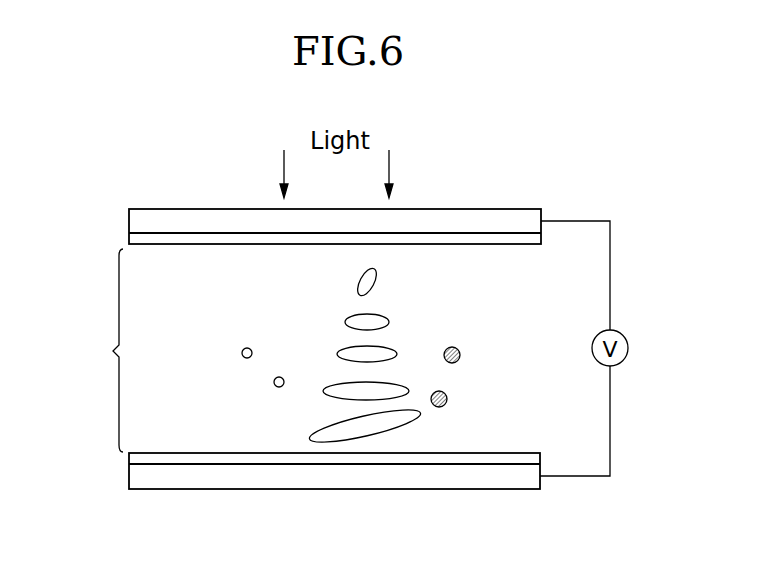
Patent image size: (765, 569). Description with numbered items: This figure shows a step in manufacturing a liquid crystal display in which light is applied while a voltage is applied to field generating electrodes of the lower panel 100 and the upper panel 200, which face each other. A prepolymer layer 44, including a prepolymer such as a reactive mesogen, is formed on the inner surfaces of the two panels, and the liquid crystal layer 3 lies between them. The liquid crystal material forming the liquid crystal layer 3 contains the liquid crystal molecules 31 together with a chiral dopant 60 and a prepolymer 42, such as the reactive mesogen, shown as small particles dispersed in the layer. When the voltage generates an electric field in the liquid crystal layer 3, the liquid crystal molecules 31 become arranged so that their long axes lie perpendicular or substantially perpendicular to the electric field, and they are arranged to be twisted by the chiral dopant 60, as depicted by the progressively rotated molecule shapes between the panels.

The upper panel 200 is at (140, 218).
The lower panel 100 is at (142, 477).
The prepolymer layer 44 is at (140, 238).
The liquid crystal layer 3 is at (109, 350).
The liquid crystal molecules 31 is at (378, 277).
The chiral dopant 60 is at (241, 352).
The prepolymer 42 is at (461, 354).